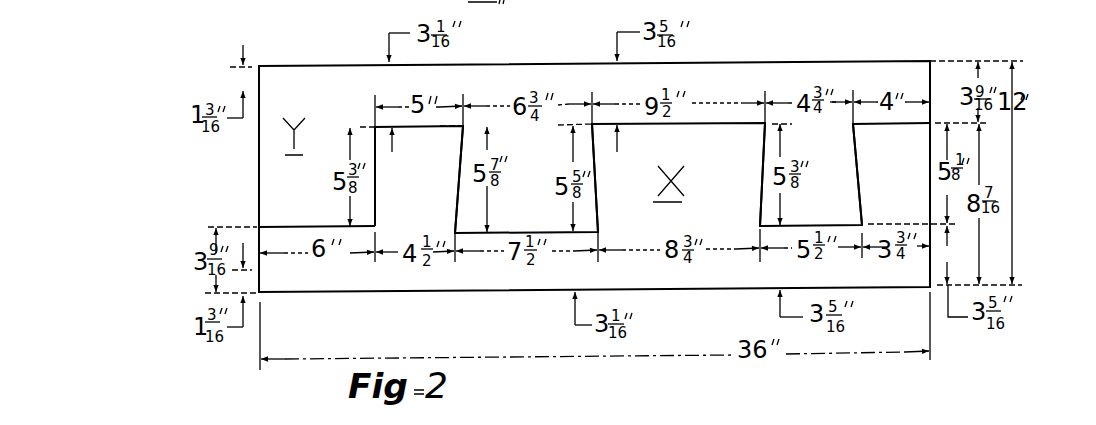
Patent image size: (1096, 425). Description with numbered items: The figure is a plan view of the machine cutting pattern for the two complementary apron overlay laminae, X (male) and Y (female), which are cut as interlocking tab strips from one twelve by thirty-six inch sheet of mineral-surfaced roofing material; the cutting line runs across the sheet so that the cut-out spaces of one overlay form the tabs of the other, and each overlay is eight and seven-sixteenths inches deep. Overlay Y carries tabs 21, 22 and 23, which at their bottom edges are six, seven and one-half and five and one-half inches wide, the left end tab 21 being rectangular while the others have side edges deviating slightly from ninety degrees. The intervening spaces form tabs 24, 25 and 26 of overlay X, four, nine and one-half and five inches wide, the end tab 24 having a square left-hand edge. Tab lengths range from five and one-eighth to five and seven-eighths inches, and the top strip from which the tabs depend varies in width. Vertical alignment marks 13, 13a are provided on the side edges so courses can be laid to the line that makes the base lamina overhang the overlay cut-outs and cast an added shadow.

The vertical alignment mark 13 is at (260, 90).
The vertical alignment mark 13a is at (260, 270).
The tab of overlay lamina Y 21 is at (290, 206).
The tab of overlay lamina Y 22 is at (538, 221).
The tab of overlay lamina Y 23 is at (861, 211).
The left end tab of overlay lamina X 24 is at (895, 158).
The tab of overlay lamina X 25 is at (733, 156).
The tab of overlay lamina X 26 is at (425, 196).